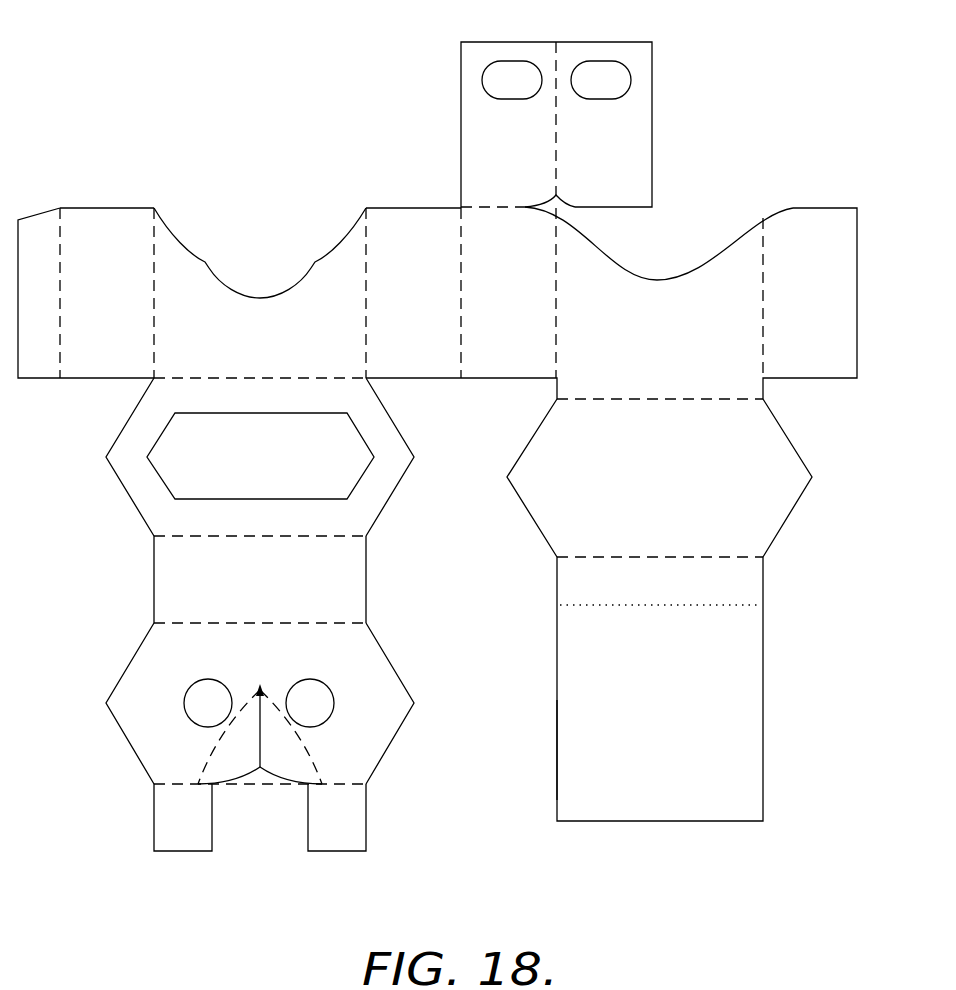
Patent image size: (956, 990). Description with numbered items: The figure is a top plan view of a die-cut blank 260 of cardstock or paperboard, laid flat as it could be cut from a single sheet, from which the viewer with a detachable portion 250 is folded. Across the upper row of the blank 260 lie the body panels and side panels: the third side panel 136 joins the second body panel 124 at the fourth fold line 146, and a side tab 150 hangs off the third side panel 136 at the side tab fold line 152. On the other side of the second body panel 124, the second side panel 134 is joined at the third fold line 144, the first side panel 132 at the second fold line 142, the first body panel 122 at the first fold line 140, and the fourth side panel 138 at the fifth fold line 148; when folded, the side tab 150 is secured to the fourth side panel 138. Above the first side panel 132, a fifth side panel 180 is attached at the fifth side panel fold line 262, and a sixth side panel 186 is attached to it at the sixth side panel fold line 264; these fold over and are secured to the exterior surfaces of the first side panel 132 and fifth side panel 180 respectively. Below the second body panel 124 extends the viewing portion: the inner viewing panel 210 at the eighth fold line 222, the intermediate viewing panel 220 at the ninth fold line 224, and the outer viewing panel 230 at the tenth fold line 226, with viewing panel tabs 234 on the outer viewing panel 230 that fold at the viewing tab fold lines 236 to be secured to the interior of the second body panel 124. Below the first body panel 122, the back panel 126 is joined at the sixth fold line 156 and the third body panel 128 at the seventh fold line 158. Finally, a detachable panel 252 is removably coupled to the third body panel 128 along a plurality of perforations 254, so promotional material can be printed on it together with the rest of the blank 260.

The blank 260 is at (176, 56).
The side tab 150 is at (37, 232).
The third side panel 136 is at (86, 323).
The side tab fold line 152 is at (64, 243).
The fourth fold line 146 is at (157, 291).
The second body panel 124 is at (234, 356).
The eighth fold line 222 is at (300, 368).
The third fold line 144 is at (369, 268).
The second side panel 134 is at (396, 338).
The second fold line 142 is at (464, 268).
The first side panel 132 is at (489, 338).
The first fold line 140 is at (560, 310).
The first body panel 122 is at (636, 363).
The fifth fold line 148 is at (767, 257).
The fourth side panel 138 is at (796, 331).
The fifth side panel 180 is at (489, 138).
The sixth side panel 186 is at (581, 138).
The fifth side panel fold line 262 is at (479, 207).
The sixth side panel fold line 264 is at (561, 162).
The sixth fold line 156 is at (704, 390).
The back panel 126 is at (643, 491).
The seventh fold line 158 is at (704, 546).
The third body panel 128 is at (636, 593).
The perforations 254 is at (704, 616).
The detachable portion 250 is at (648, 713).
The detachable panel 252 is at (557, 750).
The inner viewing panel 210 is at (233, 408).
The ninth fold line 224 is at (301, 548).
The intermediate viewing panel 220 is at (241, 598).
The tenth fold line 226 is at (319, 634).
The outer viewing panel 230 is at (241, 661).
The viewing panel tabs 234 is at (332, 829).
The viewing tab fold lines 236 is at (174, 788).